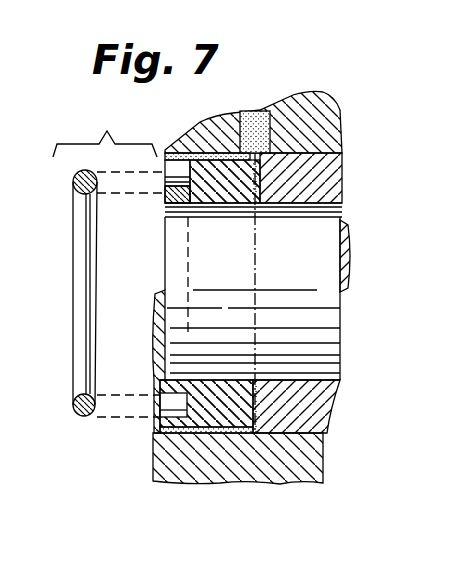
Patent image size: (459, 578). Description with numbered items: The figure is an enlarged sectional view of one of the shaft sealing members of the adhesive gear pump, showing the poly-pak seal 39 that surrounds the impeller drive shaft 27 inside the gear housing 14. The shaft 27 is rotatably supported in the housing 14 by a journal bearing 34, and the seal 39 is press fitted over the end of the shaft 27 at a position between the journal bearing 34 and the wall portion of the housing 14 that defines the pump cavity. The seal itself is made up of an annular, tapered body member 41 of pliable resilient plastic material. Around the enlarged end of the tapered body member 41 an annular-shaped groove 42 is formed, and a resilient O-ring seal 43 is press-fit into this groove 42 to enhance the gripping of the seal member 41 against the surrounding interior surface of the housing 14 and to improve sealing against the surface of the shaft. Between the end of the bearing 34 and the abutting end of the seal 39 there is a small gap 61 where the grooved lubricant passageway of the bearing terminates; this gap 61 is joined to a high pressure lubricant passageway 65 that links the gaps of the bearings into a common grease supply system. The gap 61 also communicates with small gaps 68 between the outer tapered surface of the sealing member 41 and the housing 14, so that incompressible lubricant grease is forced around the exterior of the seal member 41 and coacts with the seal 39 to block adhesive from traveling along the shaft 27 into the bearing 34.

The gear housing 14 is at (302, 90).
The impeller drive shaft 27 is at (175, 268).
The journal bearing 34 is at (297, 198).
The poly-pak seal 39 is at (265, 278).
The tapered body member 41 is at (198, 206).
The annular-shaped groove 42 is at (165, 186).
The O-ring seal 43 is at (80, 235).
The gap 61 is at (258, 194).
The lubricant passageway 65 is at (257, 112).
The small gaps 68 is at (213, 150).